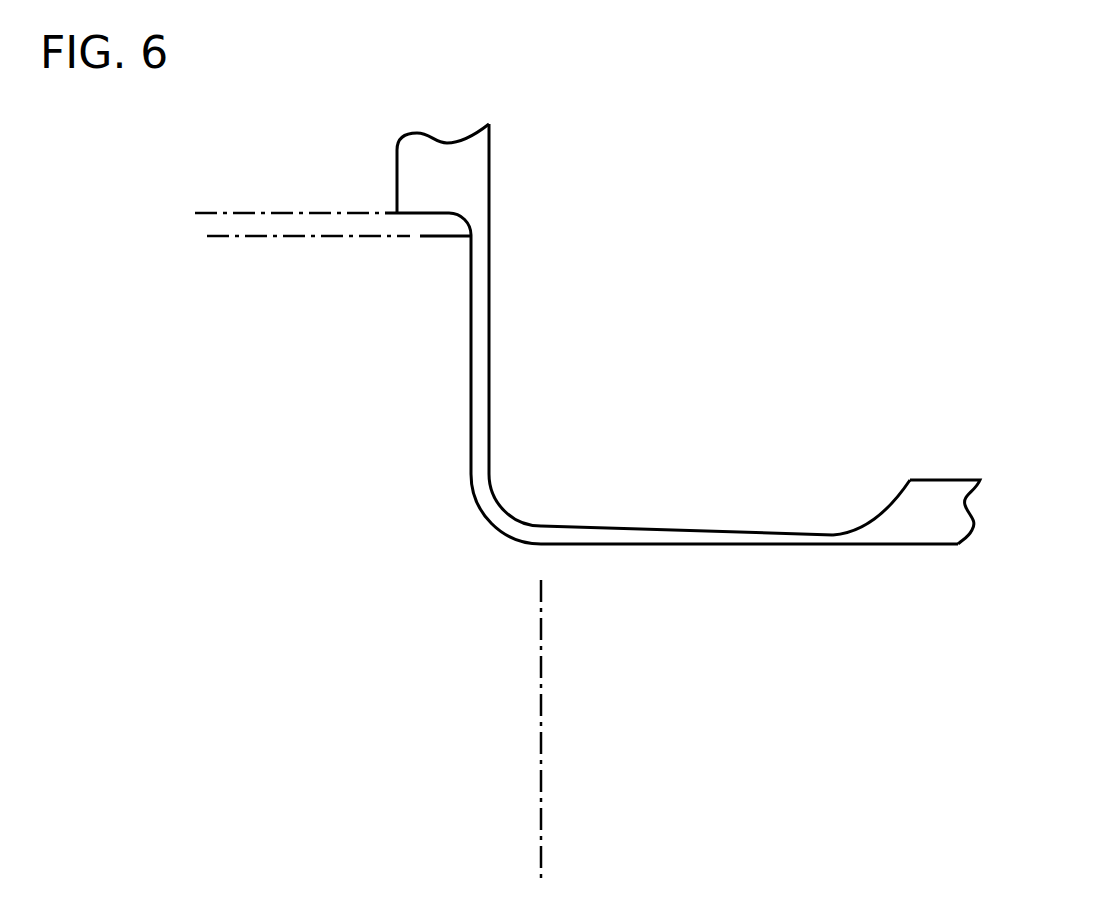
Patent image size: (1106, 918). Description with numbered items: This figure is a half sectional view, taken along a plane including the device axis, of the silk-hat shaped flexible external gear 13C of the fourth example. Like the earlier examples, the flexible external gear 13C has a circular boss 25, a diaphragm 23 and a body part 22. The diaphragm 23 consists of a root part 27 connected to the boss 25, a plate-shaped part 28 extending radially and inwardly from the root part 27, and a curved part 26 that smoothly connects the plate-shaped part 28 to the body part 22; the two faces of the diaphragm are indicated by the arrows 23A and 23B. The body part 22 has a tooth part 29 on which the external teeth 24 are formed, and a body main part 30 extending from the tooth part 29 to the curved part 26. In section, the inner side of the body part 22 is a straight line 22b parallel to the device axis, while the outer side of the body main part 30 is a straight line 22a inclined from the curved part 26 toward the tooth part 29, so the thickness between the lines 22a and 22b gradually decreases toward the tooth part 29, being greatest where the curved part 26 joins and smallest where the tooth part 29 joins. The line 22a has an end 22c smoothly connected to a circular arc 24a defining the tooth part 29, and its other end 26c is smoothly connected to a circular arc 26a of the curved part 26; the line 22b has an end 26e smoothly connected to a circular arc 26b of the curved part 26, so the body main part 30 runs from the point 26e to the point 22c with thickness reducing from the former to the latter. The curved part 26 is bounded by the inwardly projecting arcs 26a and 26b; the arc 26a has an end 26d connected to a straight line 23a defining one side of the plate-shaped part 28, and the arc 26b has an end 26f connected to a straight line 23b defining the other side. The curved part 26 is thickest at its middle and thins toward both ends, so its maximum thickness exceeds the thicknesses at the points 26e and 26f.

The flexible external gear 13C is at (752, 337).
The body part 22 is at (775, 651).
The straight line 22a is at (700, 527).
The straight line 22b is at (718, 544).
The end 22c is at (831, 525).
The diaphragm 23 is at (190, 213).
The diaphragm inner surface 23A is at (398, 475).
The diaphragm outer surface 23B is at (502, 190).
The straight line 23a is at (492, 352).
The straight line 23b is at (472, 338).
The external teeth 24 is at (946, 443).
The circular arc 24a is at (887, 507).
The circular boss 25 is at (500, 138).
The curved part 26 is at (410, 557).
The circular arc 26a is at (530, 515).
The circular arc 26b is at (492, 537).
The end 26c is at (545, 526).
The end 26d is at (490, 465).
The end 26e is at (538, 546).
The end 26f is at (490, 476).
The root part 27 is at (227, 262).
The plate-shaped part 28 is at (270, 236).
The tooth part 29 is at (833, 723).
The body main part 30 is at (541, 723).